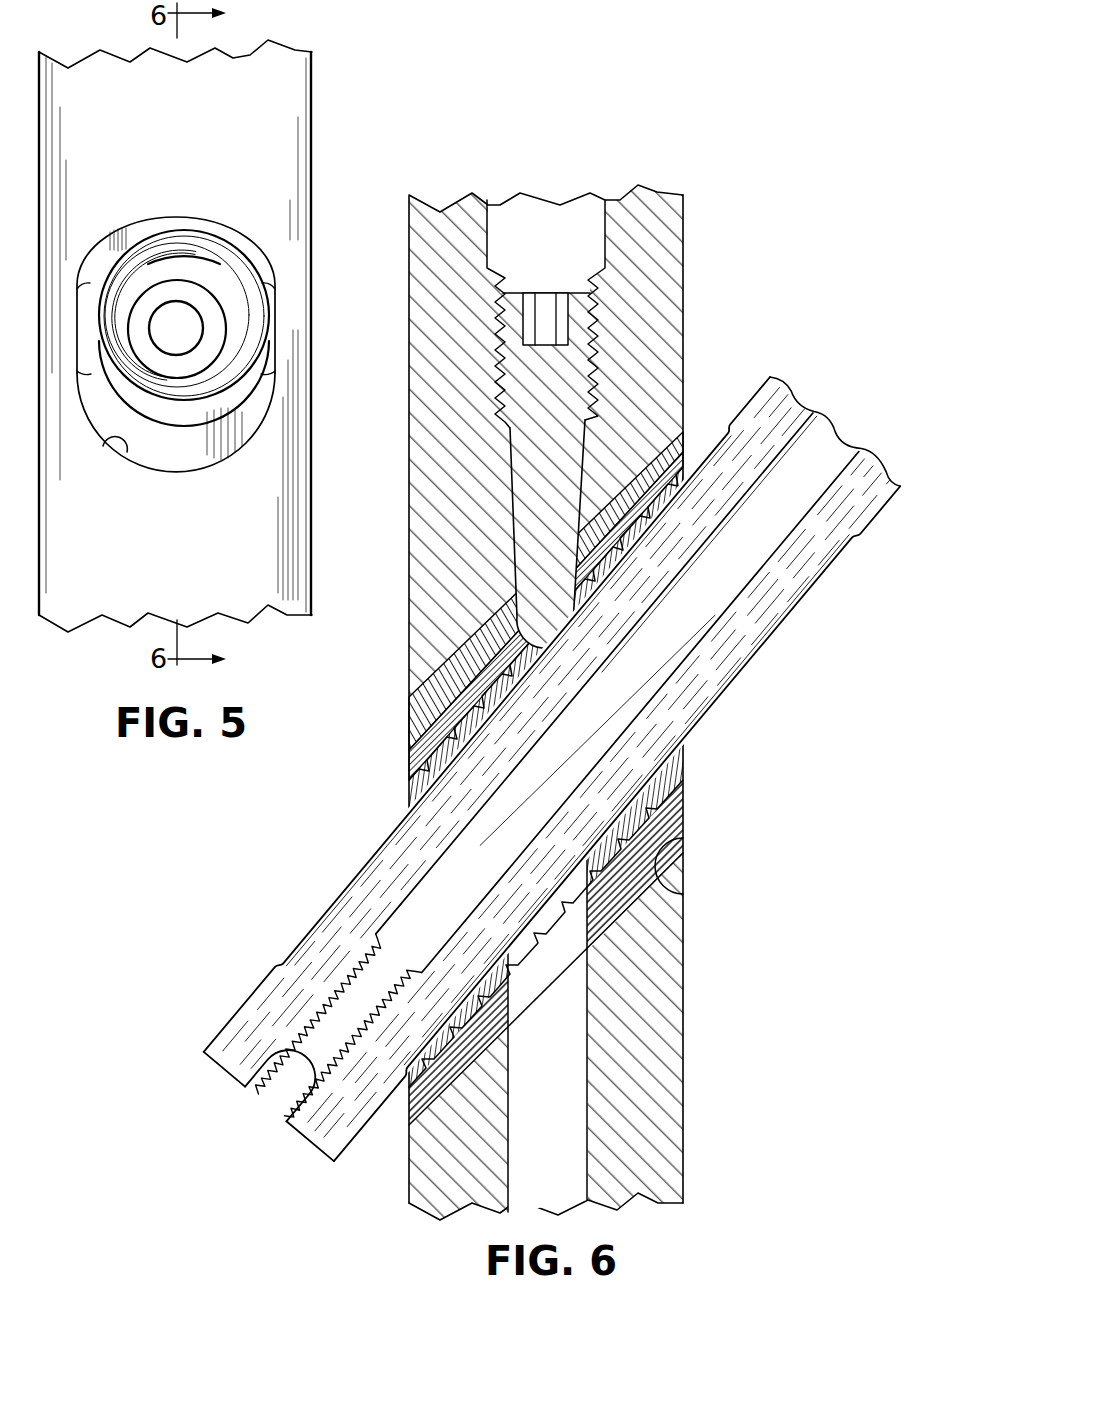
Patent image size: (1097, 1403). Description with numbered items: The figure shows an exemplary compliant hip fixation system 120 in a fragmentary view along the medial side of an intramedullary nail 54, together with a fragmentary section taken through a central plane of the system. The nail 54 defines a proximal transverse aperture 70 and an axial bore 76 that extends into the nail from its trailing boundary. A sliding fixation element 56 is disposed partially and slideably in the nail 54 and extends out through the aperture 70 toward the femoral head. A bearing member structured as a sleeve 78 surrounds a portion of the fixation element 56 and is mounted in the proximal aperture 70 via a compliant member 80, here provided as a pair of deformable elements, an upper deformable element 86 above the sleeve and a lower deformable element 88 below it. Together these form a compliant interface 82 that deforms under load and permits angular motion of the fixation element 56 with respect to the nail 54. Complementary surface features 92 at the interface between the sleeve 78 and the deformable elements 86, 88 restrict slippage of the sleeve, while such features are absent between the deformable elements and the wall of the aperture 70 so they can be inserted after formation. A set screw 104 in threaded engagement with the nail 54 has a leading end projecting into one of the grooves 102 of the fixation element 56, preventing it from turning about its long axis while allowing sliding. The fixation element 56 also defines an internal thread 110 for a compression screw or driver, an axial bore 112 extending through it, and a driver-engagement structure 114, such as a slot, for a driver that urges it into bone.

In FIG. 5, the nail 54 is at (316, 199).
In FIG. 6, the nail 54 is at (687, 310).
In FIG. 5, the fixation element 56 is at (260, 322).
In FIG. 6, the fixation element 56 is at (746, 400).
In FIG. 5, the proximal aperture 70 is at (115, 452).
In FIG. 6, the proximal aperture 70 is at (680, 851).
In FIG. 6, the axial bore 76 is at (586, 1135).
In FIG. 5, the sleeve 78 is at (101, 262).
In FIG. 6, the sleeve 78 is at (408, 796).
In FIG. 5, the compliant member 80 is at (242, 231).
In FIG. 6, the compliant member 80 is at (408, 718).
In FIG. 6, the compliant interface 82 is at (391, 664).
In FIG. 5, the upper deformable element 86 is at (202, 218).
In FIG. 6, the upper deformable element 86 is at (410, 750).
In FIG. 5, the lower deformable element 88 is at (177, 473).
In FIG. 6, the lower deformable element 88 is at (690, 805).
In FIG. 6, the complementary surface features 92 is at (430, 766).
In FIG. 6, the grooves 102 is at (722, 690).
In FIG. 6, the set screw 104 is at (573, 293).
In FIG. 6, the internal thread 110 is at (395, 990).
In FIG. 6, the axial bore 112 is at (592, 745).
In FIG. 6, the driver-engagement structure 114 is at (292, 1116).
In FIG. 5, the hip fixation system 120 is at (336, 106).
In FIG. 6, the hip fixation system 120 is at (710, 213).